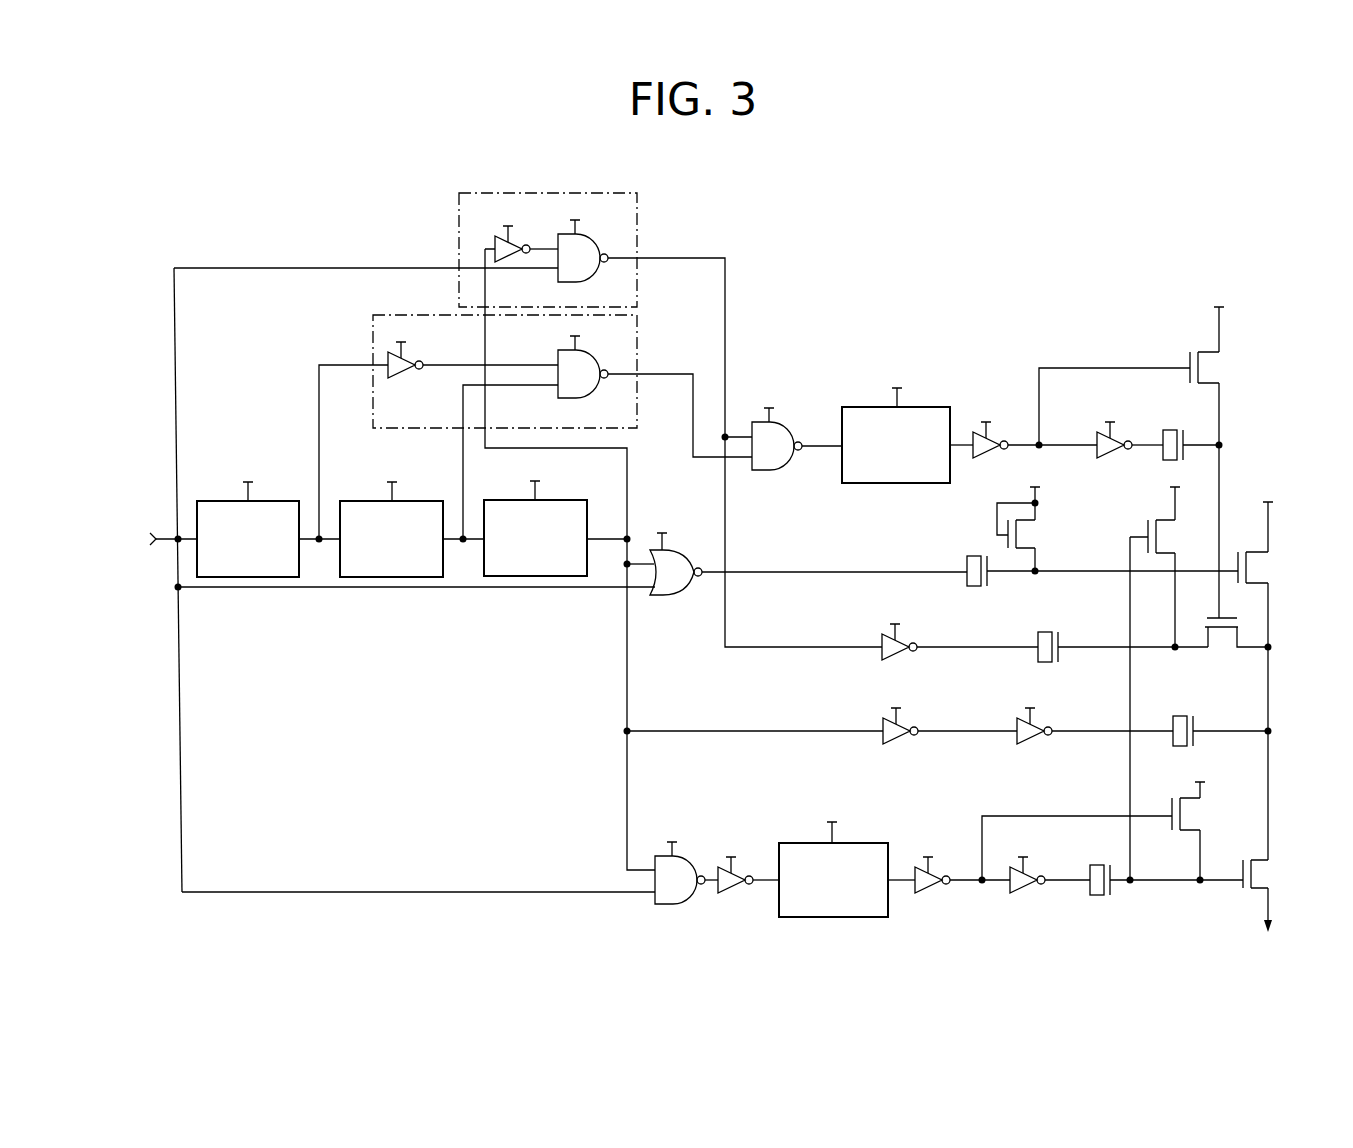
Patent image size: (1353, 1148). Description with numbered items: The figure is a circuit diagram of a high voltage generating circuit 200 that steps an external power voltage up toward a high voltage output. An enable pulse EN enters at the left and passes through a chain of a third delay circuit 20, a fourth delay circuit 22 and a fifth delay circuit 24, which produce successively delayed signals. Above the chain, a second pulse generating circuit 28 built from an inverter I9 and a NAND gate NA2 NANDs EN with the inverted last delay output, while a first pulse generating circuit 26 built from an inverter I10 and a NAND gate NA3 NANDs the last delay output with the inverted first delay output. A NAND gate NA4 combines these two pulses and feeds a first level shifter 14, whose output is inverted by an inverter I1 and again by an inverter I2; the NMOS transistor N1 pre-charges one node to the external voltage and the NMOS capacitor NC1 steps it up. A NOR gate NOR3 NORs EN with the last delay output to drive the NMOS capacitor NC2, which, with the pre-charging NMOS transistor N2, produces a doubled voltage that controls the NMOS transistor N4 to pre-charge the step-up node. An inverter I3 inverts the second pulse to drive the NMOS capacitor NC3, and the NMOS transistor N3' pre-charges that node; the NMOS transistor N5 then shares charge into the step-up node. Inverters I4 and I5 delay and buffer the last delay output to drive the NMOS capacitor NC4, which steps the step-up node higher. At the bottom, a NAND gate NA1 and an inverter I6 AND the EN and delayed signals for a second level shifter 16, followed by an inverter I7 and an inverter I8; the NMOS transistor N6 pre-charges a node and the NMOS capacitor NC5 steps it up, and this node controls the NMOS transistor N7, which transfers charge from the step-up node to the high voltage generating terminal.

The high voltage generating circuit 200 is at (863, 237).
The first level shifter 14 is at (896, 483).
The second level shifter 16 is at (841, 917).
The third delay circuit 20 is at (283, 501).
The fourth delay circuit 22 is at (426, 501).
The fifth delay circuit 24 is at (570, 500).
The first pulse generating circuit 26 is at (373, 354).
The second pulse generating circuit 28 is at (459, 212).
The NAND gate NA1 is at (690, 902).
The NAND gate NA2 is at (596, 275).
The NAND gate NA3 is at (594, 391).
The NAND gate NA4 is at (786, 464).
The NOR gate NOR3 is at (686, 590).
The inverter I1 is at (998, 438).
The inverter I2 is at (1122, 438).
The inverter I3 is at (907, 641).
The inverter I4 is at (906, 739).
The inverter I5 is at (1040, 739).
The inverter I6 is at (737, 889).
The inverter I7 is at (934, 889).
The inverter I8 is at (1026, 889).
The inverter I9 is at (495, 243).
The inverter I10 is at (415, 373).
The NMOS transistor N1 is at (1216, 451).
The NMOS transistor N2 is at (1117, 531).
The NMOS transistor N3' is at (1163, 672).
The NMOS transistor N4 is at (1273, 671).
The NMOS transistor N5 is at (1208, 634).
The NMOS transistor N6 is at (1196, 819).
The NMOS transistor N7 is at (1268, 910).
The NMOS capacitor NC1 is at (1172, 430).
The NMOS capacitor NC2 is at (965, 559).
The NMOS capacitor NC3 is at (1037, 637).
The NMOS capacitor NC4 is at (1196, 720).
The NMOS capacitor NC5 is at (1104, 895).